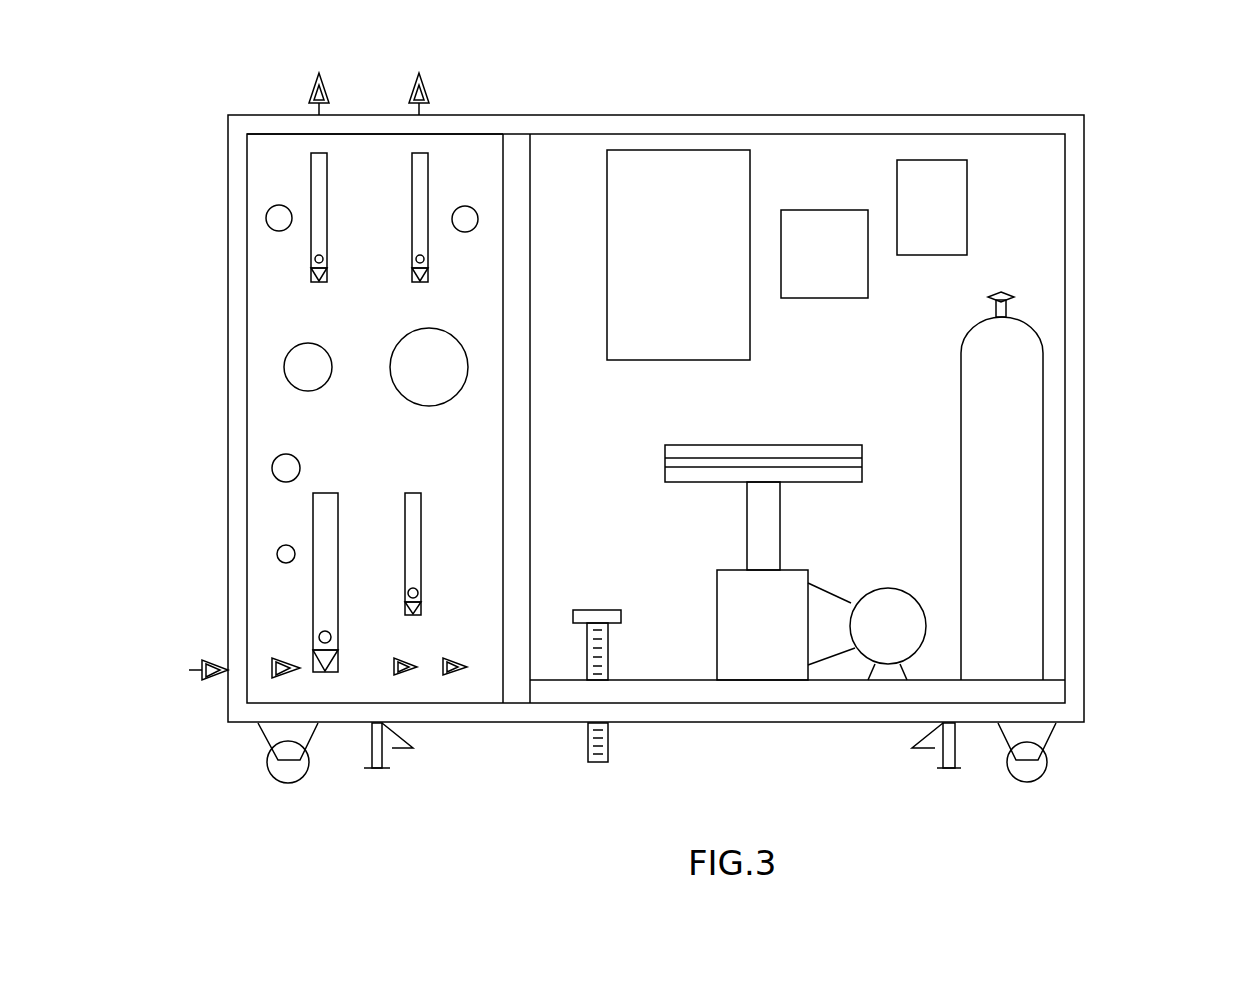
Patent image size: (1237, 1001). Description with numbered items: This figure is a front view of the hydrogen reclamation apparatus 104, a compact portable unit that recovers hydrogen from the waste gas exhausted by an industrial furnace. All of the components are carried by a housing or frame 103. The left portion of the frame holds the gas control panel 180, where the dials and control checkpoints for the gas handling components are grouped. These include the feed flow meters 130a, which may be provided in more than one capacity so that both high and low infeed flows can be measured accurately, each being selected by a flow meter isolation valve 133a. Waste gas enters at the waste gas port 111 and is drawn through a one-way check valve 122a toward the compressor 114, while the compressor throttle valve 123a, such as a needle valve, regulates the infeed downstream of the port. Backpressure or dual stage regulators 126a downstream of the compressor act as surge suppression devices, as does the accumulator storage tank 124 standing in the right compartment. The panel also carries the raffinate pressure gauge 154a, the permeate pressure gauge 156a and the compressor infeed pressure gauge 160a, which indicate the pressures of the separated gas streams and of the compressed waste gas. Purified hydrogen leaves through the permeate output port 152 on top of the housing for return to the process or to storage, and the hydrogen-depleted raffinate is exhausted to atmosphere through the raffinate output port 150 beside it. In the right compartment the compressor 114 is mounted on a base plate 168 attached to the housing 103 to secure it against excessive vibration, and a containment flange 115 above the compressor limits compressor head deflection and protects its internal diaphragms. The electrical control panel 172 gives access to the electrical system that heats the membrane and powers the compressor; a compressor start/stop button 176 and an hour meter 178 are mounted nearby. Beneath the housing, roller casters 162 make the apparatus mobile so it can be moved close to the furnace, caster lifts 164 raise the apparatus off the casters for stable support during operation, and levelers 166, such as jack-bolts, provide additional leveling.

The hydrogen reclamation apparatus 104 is at (730, 407).
The housing 103 is at (1075, 282).
The gas control panel 180 is at (364, 205).
The feed flow meter 130a is at (318, 187).
The permeate output port 152 is at (312, 88).
The raffinate output port 150 is at (428, 87).
The backpressure or dual stage regulators 126a is at (279, 218).
The raffinate pressure gauge 154a is at (417, 360).
The permeate pressure gauge 156a is at (308, 367).
The compressor infeed pressure gauge 160a is at (286, 468).
The compressor throttle valve 123a is at (286, 554).
The one-way check valve 122a is at (278, 668).
The waste gas port 111 is at (207, 662).
The flow meter isolation valve 133a is at (405, 676).
The roller casters 162 is at (277, 732).
The caster lifts 164 is at (372, 745).
The levelers 166 is at (607, 742).
The containment flange 115 is at (805, 452).
The compressor 114 is at (760, 658).
The base plate 168 is at (835, 693).
The accumulator storage tank 124 is at (1010, 572).
The electrical control panel 172 is at (668, 187).
The compressor start/stop button 176 is at (812, 240).
The hour meter 178 is at (945, 187).